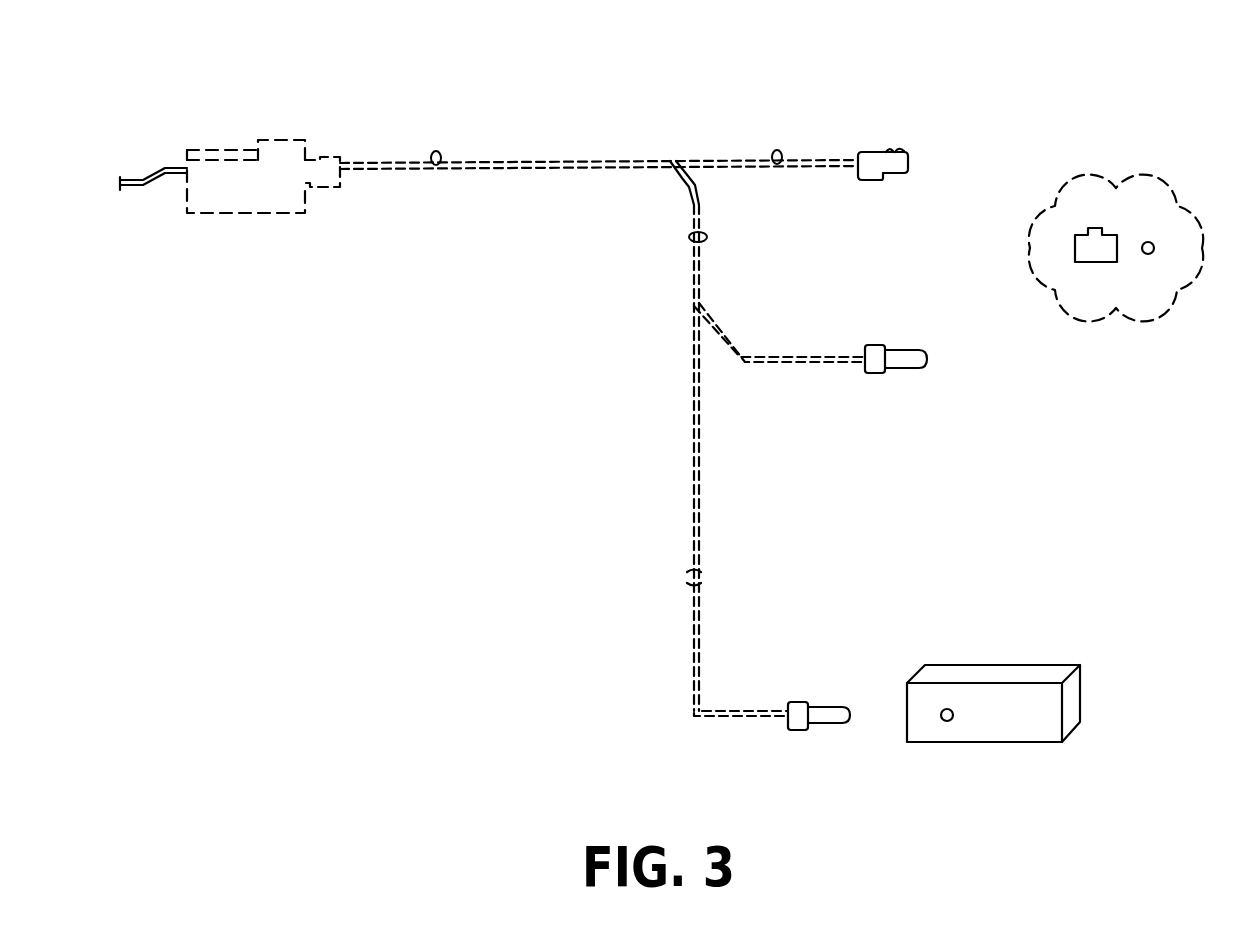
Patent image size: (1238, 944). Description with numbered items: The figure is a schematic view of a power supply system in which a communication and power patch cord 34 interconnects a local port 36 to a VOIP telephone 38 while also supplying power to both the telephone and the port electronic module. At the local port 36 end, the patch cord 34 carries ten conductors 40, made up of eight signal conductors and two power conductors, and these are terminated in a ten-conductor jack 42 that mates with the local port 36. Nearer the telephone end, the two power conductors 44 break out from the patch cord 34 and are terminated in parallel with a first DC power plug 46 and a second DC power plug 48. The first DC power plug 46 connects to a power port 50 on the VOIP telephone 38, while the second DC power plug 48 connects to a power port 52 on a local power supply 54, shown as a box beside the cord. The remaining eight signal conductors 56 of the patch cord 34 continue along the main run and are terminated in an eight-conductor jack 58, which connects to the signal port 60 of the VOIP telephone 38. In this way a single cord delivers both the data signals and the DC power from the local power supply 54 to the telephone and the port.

The patch cord 34 is at (541, 142).
The local port 36 is at (278, 146).
The VOIP telephone 38 is at (1161, 162).
The ten conductors 40 is at (433, 176).
The ten-conductor jack 42 is at (320, 158).
The two power conductors 44 is at (682, 240).
The first DC power plug 46 is at (903, 373).
The second DC power plug 48 is at (825, 730).
The power port 50 is at (1151, 254).
The power port 52 is at (949, 721).
The local power supply 54 is at (1035, 673).
The eight signal conductors 56 is at (774, 175).
The 8-conductor jack 58 is at (870, 150).
The signal port 60 is at (1090, 262).